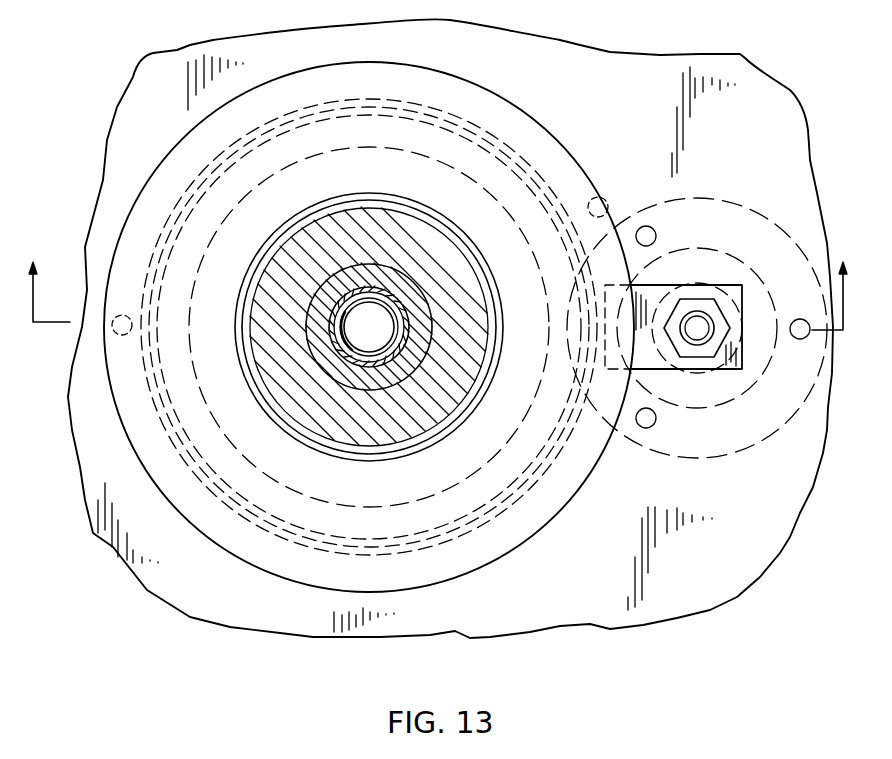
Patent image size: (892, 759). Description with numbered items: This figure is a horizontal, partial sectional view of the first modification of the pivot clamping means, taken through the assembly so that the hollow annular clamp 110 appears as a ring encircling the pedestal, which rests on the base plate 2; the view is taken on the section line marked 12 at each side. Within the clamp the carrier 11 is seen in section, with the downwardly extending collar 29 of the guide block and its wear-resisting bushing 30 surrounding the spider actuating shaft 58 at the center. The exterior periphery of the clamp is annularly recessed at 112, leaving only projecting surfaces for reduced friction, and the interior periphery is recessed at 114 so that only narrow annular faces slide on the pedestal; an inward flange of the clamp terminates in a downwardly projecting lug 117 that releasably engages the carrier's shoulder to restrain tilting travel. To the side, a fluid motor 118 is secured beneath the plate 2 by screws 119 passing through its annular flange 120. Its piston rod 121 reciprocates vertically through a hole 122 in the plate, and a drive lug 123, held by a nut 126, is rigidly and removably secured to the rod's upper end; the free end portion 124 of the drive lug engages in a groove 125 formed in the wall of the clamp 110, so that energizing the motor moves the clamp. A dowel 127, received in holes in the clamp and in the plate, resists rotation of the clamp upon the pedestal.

The base plate 2 is at (182, 84).
The carrier 11 is at (432, 438).
The section line 12- 12 is at (441, 284).
The downwardly extending collar 29 is at (427, 360).
The bushing 30 is at (398, 300).
The spider actuating shaft 58 is at (371, 300).
The annular clamp 110 is at (530, 540).
The annular recess 112 is at (230, 151).
The interior annular recess 114 is at (243, 157).
The annular downwardly projecting lug 117 is at (363, 148).
The fluid motor 118 is at (690, 410).
The screws 119 is at (803, 318).
The annular flange 120 is at (703, 460).
The piston rod 121 is at (698, 325).
The hole 122 is at (688, 371).
The drive lug 123 is at (745, 372).
The free end portion 124 is at (615, 438).
The groove 125 is at (600, 196).
The nut 126 is at (688, 300).
The dowel 127 is at (114, 334).